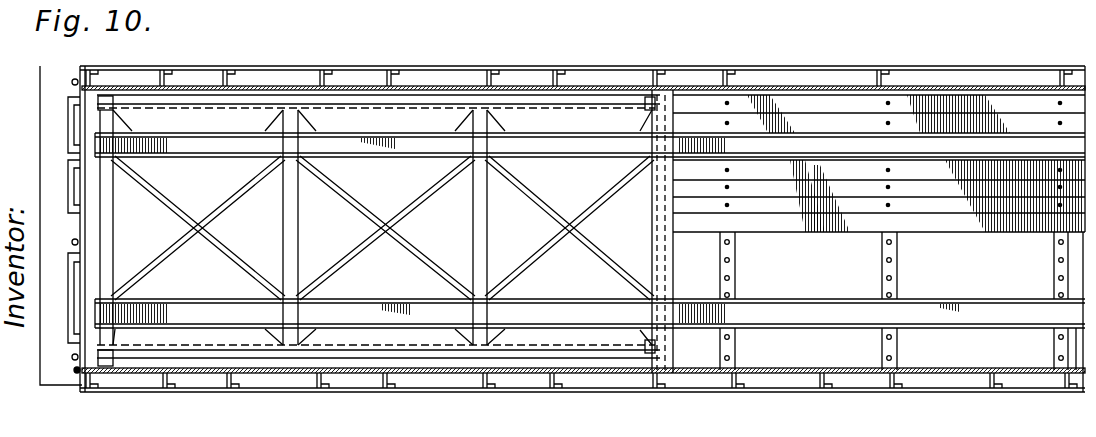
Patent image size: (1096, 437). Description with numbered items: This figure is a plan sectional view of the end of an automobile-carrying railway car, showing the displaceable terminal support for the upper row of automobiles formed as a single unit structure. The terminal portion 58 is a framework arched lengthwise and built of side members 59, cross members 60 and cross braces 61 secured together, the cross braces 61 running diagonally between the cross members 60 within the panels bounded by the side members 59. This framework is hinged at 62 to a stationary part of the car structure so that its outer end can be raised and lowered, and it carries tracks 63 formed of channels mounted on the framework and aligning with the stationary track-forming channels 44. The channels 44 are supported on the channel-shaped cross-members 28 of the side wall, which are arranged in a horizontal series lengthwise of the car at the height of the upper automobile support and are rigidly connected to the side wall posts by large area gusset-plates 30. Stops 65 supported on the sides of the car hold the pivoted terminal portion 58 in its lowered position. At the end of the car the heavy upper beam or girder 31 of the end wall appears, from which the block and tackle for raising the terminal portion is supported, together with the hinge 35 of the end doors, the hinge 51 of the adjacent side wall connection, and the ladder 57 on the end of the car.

The cross-member 28 is at (736, 278).
The gusset-plate 30 is at (898, 347).
The upper beam or girder 31 is at (273, 5).
The hinge 35 is at (75, 374).
The track-forming channel 44 is at (994, 313).
The hinge 51 is at (594, 9).
The ladder 57 is at (66, 133).
The terminal portion 58 is at (236, 146).
The side member 59 is at (426, 108).
The cross member 60 is at (117, 262).
The cross brace 61 is at (208, 215).
The hinge 62 is at (673, 258).
The track 63 is at (468, 146).
The stop 65 is at (107, 97).